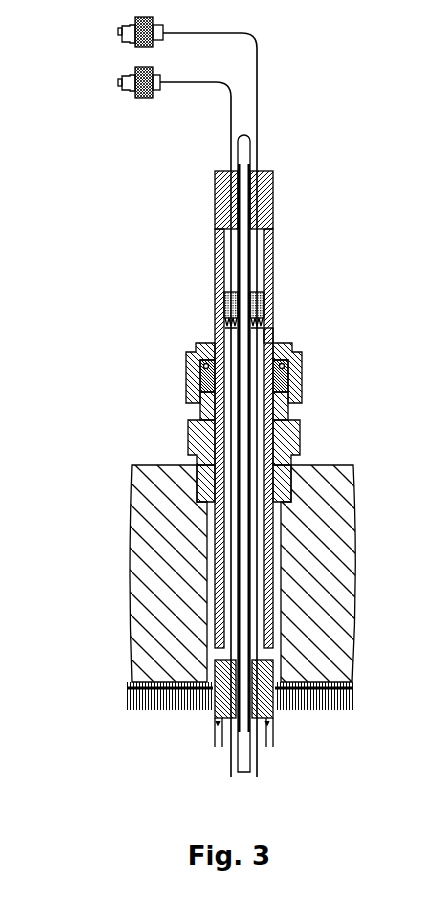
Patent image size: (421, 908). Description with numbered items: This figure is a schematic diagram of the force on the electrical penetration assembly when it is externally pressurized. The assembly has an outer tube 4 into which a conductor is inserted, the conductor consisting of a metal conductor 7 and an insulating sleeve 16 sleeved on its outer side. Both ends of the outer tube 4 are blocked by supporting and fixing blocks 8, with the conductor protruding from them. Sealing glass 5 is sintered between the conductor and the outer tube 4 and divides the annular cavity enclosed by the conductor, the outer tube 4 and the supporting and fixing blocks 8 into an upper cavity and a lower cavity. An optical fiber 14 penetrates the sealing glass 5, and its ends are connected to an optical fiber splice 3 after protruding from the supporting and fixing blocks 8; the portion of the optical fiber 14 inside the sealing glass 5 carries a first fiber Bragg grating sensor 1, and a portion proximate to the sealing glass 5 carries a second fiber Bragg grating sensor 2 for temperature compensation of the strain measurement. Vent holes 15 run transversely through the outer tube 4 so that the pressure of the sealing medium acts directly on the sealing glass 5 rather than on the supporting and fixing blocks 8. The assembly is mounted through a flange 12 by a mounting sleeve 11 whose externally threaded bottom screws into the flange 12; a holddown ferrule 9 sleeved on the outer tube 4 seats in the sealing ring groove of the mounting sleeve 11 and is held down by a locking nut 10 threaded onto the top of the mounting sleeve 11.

The first fiber Bragg grating sensor 1 is at (222, 302).
The second fiber Bragg grating sensor 2 is at (227, 337).
The optical fiber splice 3 is at (118, 78).
The outer tube 4 is at (272, 335).
The sealing glass 5 is at (268, 287).
The metal conductor 7 is at (247, 333).
The supporting and fixing block 8 is at (232, 222).
The holddown ferrule 9 is at (278, 382).
The locking nut 10 is at (300, 358).
The mounting sleeve 11 is at (298, 437).
The flange 12 is at (135, 498).
The optical fiber 14 is at (229, 117).
The vent hole 15 is at (219, 234).
The insulating sleeve 16 is at (257, 167).